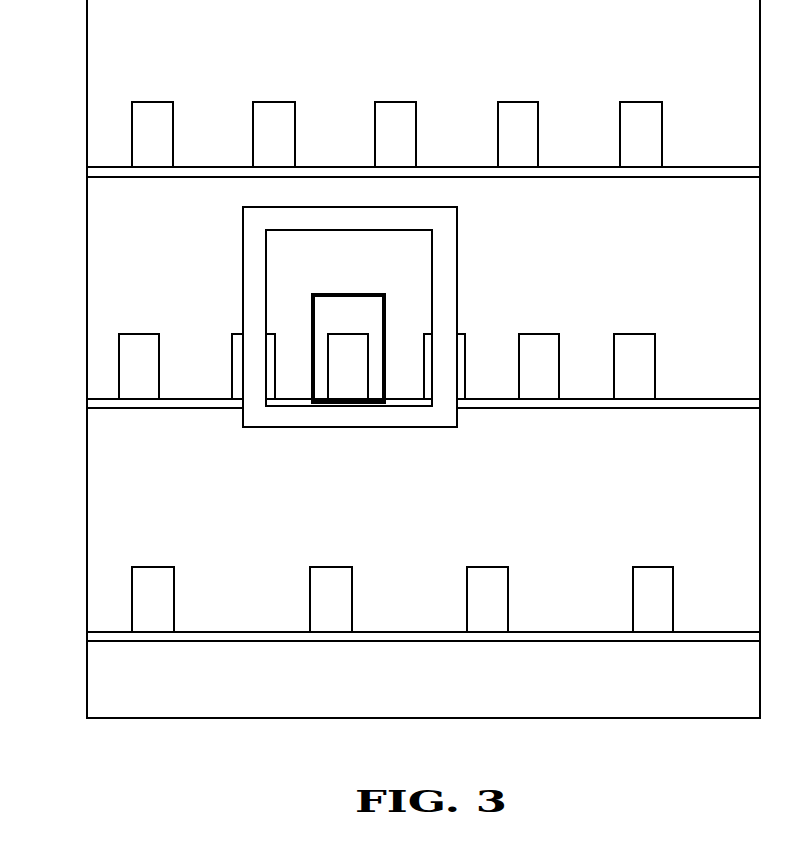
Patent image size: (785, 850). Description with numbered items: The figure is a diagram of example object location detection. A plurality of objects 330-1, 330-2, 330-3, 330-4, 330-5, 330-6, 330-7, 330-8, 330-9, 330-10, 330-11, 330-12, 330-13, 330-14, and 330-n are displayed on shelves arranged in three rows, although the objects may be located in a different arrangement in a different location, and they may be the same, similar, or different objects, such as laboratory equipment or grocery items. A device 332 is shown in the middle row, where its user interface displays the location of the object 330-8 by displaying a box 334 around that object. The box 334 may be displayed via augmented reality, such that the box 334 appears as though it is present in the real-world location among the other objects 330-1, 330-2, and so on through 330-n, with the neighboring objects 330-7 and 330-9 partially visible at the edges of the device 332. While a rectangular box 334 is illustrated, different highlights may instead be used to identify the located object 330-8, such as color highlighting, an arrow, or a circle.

The object 330-1 is at (153, 102).
The object 330-2 is at (276, 102).
The object 330-3 is at (398, 102).
The object 330-4 is at (519, 102).
The object 330-5 is at (642, 102).
The object 330-6 is at (140, 334).
The object 330-7 is at (240, 334).
The object 330-8 is at (350, 334).
The object 330-9 is at (461, 334).
The object 330-10 is at (541, 334).
The object 330-11 is at (635, 334).
The object 330-12 is at (152, 567).
The object 330-13 is at (333, 567).
The object 330-14 is at (487, 567).
The object 330-n is at (653, 567).
The device 332 is at (457, 225).
The box 334 is at (320, 402).